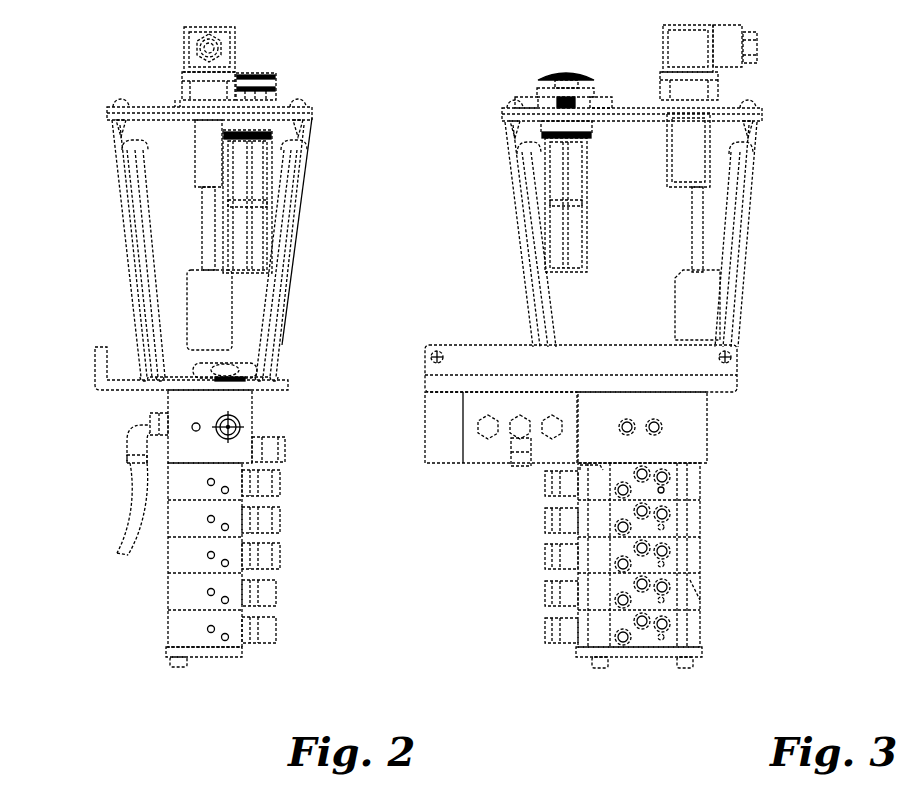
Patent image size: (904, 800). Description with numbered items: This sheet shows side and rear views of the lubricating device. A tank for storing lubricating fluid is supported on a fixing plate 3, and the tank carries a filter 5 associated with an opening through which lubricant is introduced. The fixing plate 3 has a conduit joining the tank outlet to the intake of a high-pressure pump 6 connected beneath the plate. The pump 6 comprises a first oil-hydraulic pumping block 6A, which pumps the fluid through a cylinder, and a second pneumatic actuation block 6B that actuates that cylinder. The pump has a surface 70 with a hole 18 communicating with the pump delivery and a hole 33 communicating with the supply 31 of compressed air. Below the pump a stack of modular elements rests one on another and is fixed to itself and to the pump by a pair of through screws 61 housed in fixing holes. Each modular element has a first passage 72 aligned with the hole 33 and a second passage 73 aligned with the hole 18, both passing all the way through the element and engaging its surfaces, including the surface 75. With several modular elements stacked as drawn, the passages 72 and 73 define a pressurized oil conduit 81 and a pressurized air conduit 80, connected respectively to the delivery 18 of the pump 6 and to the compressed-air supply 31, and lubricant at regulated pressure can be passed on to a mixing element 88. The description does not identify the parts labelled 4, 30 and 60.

In FIG. 2, the fixing plate 3 is at (98, 375).
In FIG. 2, the pump piston rod 4 is at (207, 170).
In FIG. 2, the filter 5 is at (257, 185).
In FIG. 2, the pump 6 is at (267, 82).
In FIG. 3, the pump 6 is at (405, 478).
In FIG. 3, the first oil-hydraulic pumping block 6A is at (645, 405).
In FIG. 3, the second pneumatic actuation block 6B is at (477, 403).
In FIG. 3, the hole 18 is at (677, 466).
In FIG. 2, the connection fitting 30 is at (150, 420).
In FIG. 3, the connection fitting 30 is at (518, 430).
In FIG. 2, the supply of compressed air 31 is at (125, 535).
In FIG. 3, the hole 33 is at (600, 466).
In FIG. 2, the distributor block 60 is at (225, 657).
In FIG. 3, the distributor block 60 is at (645, 657).
In FIG. 2, the through screws 61 is at (180, 667).
In FIG. 3, the through screws 61 is at (600, 668).
In FIG. 3, the surface 70 is at (663, 463).
In FIG. 3, the first passage 72 is at (560, 468).
In FIG. 3, the second passage 73 is at (685, 478).
In FIG. 3, the surface 75 is at (603, 548).
In FIG. 3, the pressurized air conduit 80 is at (568, 652).
In FIG. 3, the pressurized oil conduit 81 is at (685, 595).
In FIG. 3, the mixing element 88 is at (558, 520).